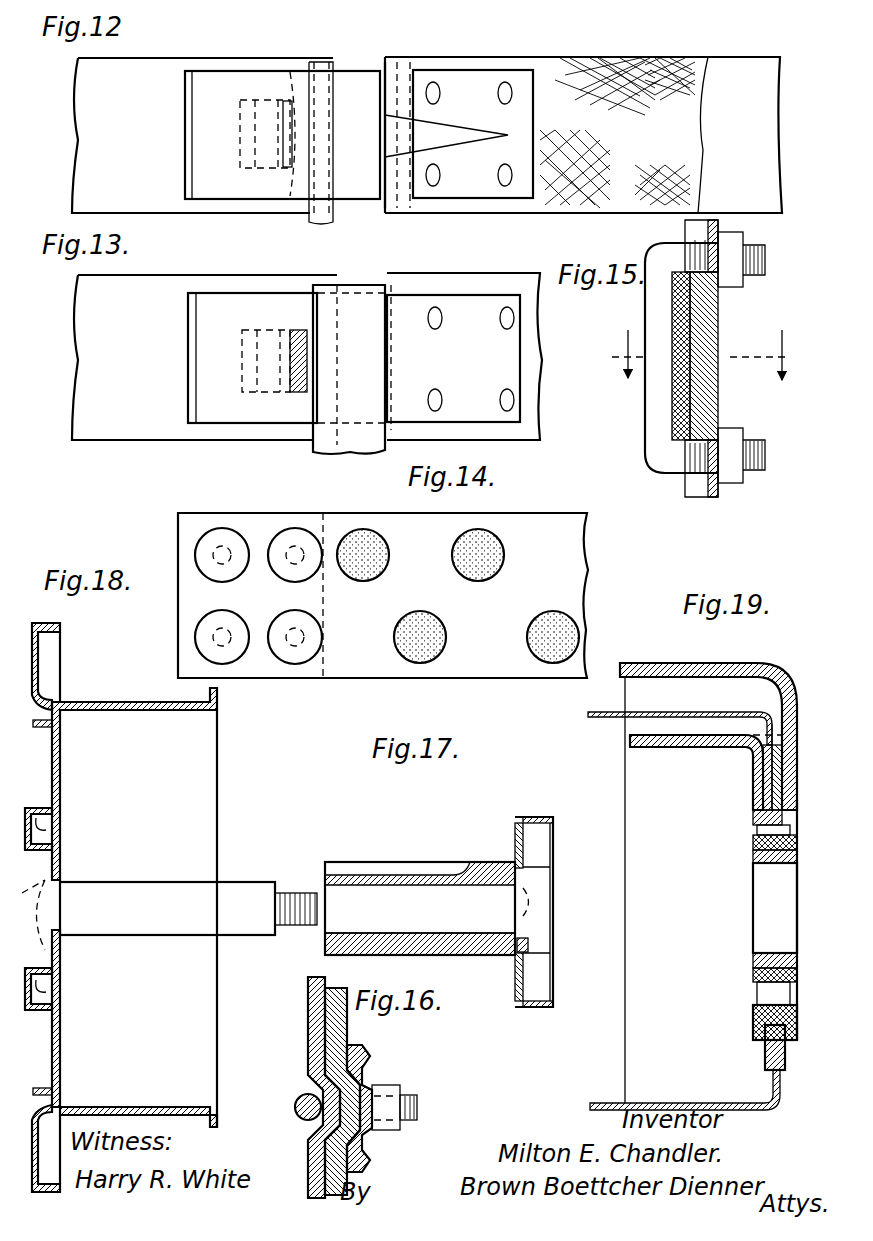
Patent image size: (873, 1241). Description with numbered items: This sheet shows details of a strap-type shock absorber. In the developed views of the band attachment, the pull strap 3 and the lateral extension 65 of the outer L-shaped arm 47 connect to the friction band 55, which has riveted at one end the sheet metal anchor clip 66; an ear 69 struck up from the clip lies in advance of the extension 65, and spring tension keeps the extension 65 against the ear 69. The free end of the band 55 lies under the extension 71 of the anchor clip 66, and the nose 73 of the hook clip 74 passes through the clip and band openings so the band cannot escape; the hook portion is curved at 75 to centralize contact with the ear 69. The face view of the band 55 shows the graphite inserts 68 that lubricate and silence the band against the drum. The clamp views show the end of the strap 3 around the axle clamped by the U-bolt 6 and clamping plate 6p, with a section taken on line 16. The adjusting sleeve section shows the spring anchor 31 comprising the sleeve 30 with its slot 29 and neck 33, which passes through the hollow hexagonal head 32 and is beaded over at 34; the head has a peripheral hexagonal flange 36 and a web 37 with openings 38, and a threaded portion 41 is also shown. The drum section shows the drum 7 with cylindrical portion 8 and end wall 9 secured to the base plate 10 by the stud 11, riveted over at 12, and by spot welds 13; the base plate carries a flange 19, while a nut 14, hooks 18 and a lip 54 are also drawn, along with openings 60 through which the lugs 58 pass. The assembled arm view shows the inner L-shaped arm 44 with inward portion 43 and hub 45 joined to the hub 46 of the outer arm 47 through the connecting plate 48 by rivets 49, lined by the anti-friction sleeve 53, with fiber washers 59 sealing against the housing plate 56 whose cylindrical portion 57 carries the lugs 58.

In FIG. 12, the strap 3 is at (612, 62).
In FIG. 15, the strap 3 is at (678, 418).
In FIG. 16, the strap 3 is at (308, 1005).
In FIG. 15, the U-bolt 6 is at (655, 383).
In FIG. 16, the U-bolt 6 is at (300, 1100).
In FIG. 15, the clamping plate 6p is at (718, 398).
In FIG. 16, the clamping plate 6p is at (362, 1080).
In FIG. 18, the drum 7 is at (221, 765).
In FIG. 18, the cylindrical portion 8 is at (145, 712).
In FIG. 18, the end wall 9 is at (60, 802).
In FIG. 18, the base plate 10 is at (64, 676).
In FIG. 18, the stud 11 is at (228, 885).
In FIG. 18, the riveted end 12 is at (52, 897).
In FIG. 18, the spot welds 13 is at (62, 758).
In FIG. 18, the nut 14 is at (50, 958).
In FIG. 15, the section line 16— 16 is at (707, 358).
In FIG. 18, the hook 18 is at (45, 822).
In FIG. 18, the flange 19 is at (60, 630).
In FIG. 17, the slot 29 is at (373, 866).
In FIG. 17, the sleeve 30 is at (470, 868).
In FIG. 17, the spring anchor 31 is at (481, 832).
In FIG. 17, the hollow hexagonal head 32 is at (527, 815).
In FIG. 17, the neck 33 is at (528, 894).
In FIG. 17, the beaded portion 34 is at (530, 948).
In FIG. 17, the peripheral hexagonal flange 36 is at (555, 821).
In FIG. 17, the web portion 37 is at (527, 864).
In FIG. 17, the openings 38 is at (520, 842).
In FIG. 17, the threaded rod end 41 is at (290, 893).
In FIG. 19, the inwardly extending portion 43 is at (668, 750).
In FIG. 19, the inner L-shaped arm 44 is at (718, 762).
In FIG. 19, the hub 45 is at (758, 830).
In FIG. 19, the hub 46 is at (760, 798).
In FIG. 19, the outer L-shaped arm 47 is at (793, 676).
In FIG. 19, the connecting plate 48 is at (762, 866).
In FIG. 19, the rivets 49 is at (757, 846).
In FIG. 19, the sleeve of anti-friction material 53 is at (754, 908).
In FIG. 18, the lip 54 is at (217, 695).
In FIG. 12, the friction band 55 is at (163, 68).
In FIG. 13, the friction band 55 is at (527, 345).
In FIG. 14, the friction band 55 is at (363, 660).
In FIG. 19, the friction band 55 is at (774, 1078).
In FIG. 19, the plate 56 is at (766, 1058).
In FIG. 19, the cylindrical portion 57 is at (665, 1102).
In FIG. 19, the lugs 58 is at (604, 718).
In FIG. 19, the fiber washers 59 is at (763, 786).
In FIG. 18, the openings 60 is at (62, 718).
In FIG. 12, the lateral extension 65 is at (316, 222).
In FIG. 13, the lateral extension 65 is at (318, 450).
In FIG. 19, the lateral extension 65 is at (700, 663).
In FIG. 13, the anchor clip 66 is at (458, 310).
In FIG. 14, the graphite insert 68 is at (420, 610).
In FIG. 13, the ear 69 is at (305, 380).
In FIG. 12, the extension 71 is at (210, 180).
In FIG. 13, the extension 71 is at (212, 302).
In FIG. 13, the nose 73 is at (305, 350).
In FIG. 12, the hook clip 74 is at (485, 75).
In FIG. 12, the curved portion 75 is at (300, 130).